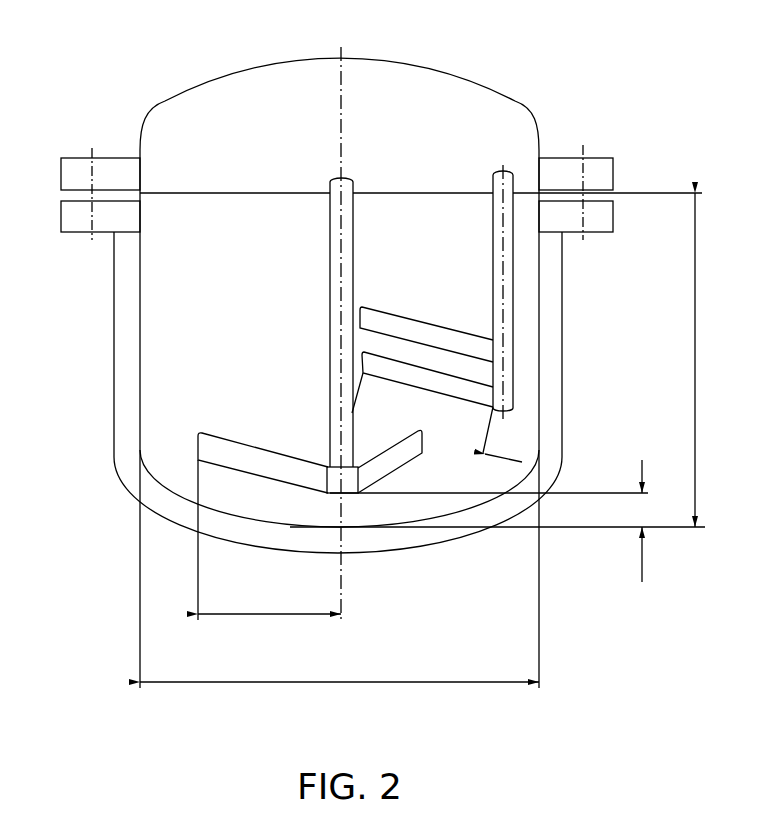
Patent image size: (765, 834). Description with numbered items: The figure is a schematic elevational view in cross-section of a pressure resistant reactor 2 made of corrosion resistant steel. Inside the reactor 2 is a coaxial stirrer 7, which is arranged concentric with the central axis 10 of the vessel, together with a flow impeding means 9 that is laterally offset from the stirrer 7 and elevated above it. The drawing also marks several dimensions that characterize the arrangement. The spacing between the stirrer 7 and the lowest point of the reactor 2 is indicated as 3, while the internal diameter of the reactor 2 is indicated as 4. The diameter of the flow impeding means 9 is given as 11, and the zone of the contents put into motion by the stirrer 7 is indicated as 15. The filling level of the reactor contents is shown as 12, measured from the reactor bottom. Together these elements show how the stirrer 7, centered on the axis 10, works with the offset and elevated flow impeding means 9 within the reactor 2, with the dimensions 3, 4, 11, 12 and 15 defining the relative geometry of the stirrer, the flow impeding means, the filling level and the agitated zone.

The reactor 2 is at (125, 348).
The axis 10 is at (342, 75).
The stirrer 7 is at (343, 177).
The flow impeding means 9 is at (503, 167).
The diameter of the flow impeding means 11 is at (346, 410).
The filling level 12 is at (497, 360).
The spacing between stirrer and lowest point of the reactor 3 is at (489, 521).
The zone put into motion 15 is at (279, 540).
The internal diameter of the reactor 4 is at (339, 569).